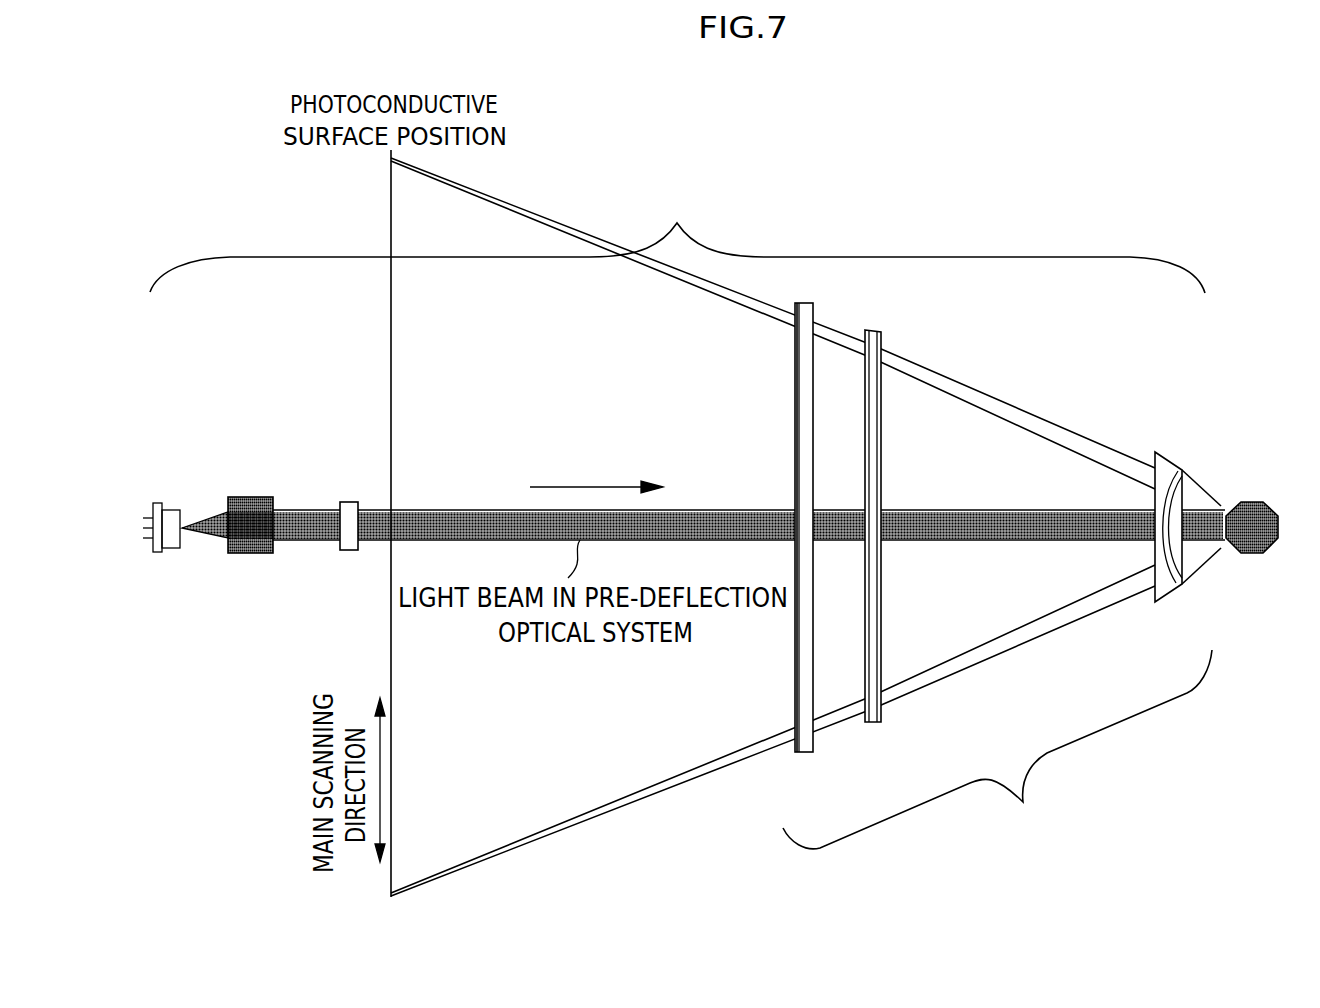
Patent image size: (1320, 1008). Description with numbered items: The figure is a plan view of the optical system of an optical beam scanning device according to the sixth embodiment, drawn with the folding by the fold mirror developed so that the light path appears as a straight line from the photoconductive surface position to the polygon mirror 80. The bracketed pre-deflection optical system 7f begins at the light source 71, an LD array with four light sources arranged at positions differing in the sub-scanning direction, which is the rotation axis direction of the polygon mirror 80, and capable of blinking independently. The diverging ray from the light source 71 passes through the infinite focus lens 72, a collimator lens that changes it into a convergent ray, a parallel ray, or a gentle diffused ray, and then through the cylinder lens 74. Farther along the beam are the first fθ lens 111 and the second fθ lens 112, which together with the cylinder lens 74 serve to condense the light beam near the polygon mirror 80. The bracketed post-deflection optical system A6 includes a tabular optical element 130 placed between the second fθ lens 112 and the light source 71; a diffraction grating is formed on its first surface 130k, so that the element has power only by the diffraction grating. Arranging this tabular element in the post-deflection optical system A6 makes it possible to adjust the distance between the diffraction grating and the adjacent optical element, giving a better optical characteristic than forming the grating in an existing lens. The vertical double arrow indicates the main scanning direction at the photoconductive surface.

The light source 71 is at (168, 552).
The infinite focus lens 72 is at (252, 553).
The cylinder lens 74 is at (353, 552).
The tabular optical element 130 is at (805, 753).
The first surface 130k is at (795, 413).
The fθ 2 lens 112 is at (876, 724).
The fθ 1 lens 111 is at (1171, 598).
The polygon mirror 80 is at (1249, 497).
The pre-deflection optical system 7f is at (677, 241).
The post-deflection optical system A6 is at (997, 749).